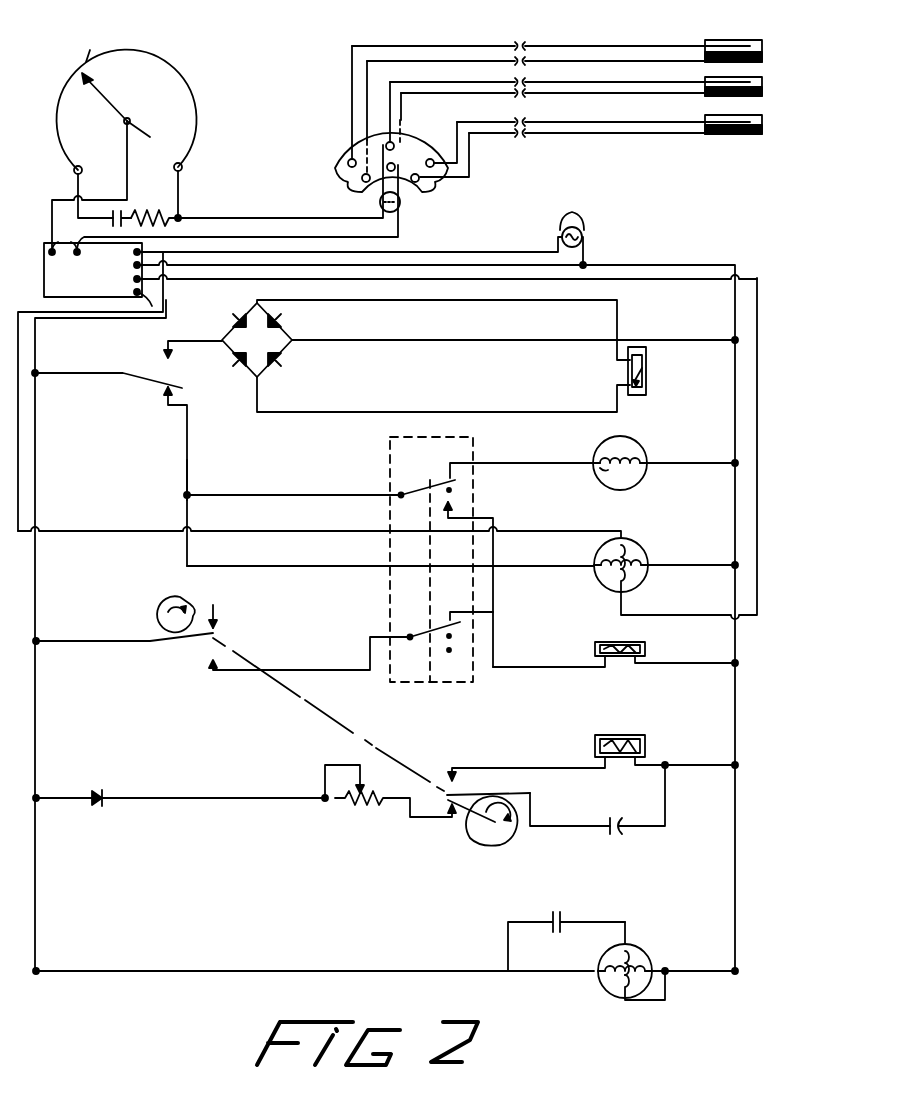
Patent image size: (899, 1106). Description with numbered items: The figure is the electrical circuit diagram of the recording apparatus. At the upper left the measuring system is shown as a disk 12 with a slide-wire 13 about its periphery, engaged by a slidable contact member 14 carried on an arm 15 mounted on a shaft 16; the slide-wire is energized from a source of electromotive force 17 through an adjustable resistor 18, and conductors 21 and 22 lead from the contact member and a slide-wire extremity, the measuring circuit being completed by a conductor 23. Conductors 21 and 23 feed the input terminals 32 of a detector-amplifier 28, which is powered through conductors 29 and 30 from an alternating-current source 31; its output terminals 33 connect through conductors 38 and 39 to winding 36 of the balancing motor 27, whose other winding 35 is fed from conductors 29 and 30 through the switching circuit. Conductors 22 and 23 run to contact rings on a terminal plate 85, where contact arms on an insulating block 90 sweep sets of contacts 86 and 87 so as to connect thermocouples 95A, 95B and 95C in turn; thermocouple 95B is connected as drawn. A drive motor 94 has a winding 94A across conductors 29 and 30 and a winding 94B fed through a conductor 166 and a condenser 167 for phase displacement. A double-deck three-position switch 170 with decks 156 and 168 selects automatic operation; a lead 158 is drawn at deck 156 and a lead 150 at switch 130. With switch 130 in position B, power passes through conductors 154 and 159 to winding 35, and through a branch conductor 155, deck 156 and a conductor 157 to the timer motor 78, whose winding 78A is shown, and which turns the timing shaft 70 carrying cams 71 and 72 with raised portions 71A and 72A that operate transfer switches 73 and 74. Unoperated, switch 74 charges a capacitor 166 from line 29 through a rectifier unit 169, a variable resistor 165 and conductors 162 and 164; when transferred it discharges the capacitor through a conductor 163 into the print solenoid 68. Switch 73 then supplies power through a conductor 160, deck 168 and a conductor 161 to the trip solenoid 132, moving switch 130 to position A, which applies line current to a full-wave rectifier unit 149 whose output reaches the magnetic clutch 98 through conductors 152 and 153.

The disk 12 is at (164, 117).
The slide-wire 13 is at (158, 60).
The slidable contact member 14 is at (81, 47).
The arm 15 is at (100, 95).
The shaft 16 is at (148, 137).
The source of electromotive force 17 is at (116, 214).
The adjustable resistor 18 is at (152, 210).
The conductor 21 is at (124, 144).
The conductor 22 is at (222, 218).
The conductor 23 is at (404, 236).
The balancing motor 27 is at (640, 544).
The detector-amplifier 28 is at (46, 268).
The conductor 29 is at (460, 252).
The conductor 30 is at (497, 265).
The alternating-current source 31 is at (572, 210).
The input terminals 32 is at (64, 239).
The output terminals 33 is at (148, 304).
The winding 35 is at (608, 575).
The winding 36 is at (636, 578).
The conductor 38 is at (22, 432).
The conductor 39 is at (224, 284).
The print solenoid 68 is at (644, 736).
The timing shaft 70 is at (326, 712).
The cam 71 is at (155, 604).
The raised portion 71A is at (196, 604).
The cam 72 is at (518, 840).
The raised portion 72A is at (468, 832).
The transfer switch 73 is at (226, 642).
The transfer switch 74 is at (443, 782).
The timer motor 78 is at (644, 450).
The timer motor winding 78A is at (600, 470).
The terminal plate 85 is at (424, 136).
The contacts 86 is at (348, 160).
The contacts 87 is at (362, 184).
The insulating block 90 is at (398, 202).
The drive motor 94 is at (632, 940).
The winding 94A is at (610, 976).
The winding 94B is at (612, 956).
The thermocouple 95A is at (718, 40).
The thermocouple 95B is at (710, 78).
The thermocouple 95C is at (712, 116).
The magnetic clutch 98 is at (647, 374).
The switch 130 is at (189, 378).
The trip solenoid 132 is at (640, 643).
The full-wave rectifier unit 149 is at (298, 328).
The conductor 150 is at (174, 336).
The conductor 152 is at (340, 303).
The conductor 153 is at (376, 412).
The conductor 154 is at (194, 474).
The branch conductor 155 is at (278, 495).
The switch deck 156 is at (458, 490).
The conductor 157 is at (510, 463).
The conductor 158 is at (484, 518).
The conductor 159 is at (288, 566).
The conductor 160 is at (268, 670).
The conductor 161 is at (540, 667).
The conductor 162 is at (392, 804).
The conductor 163 is at (526, 768).
The conductor 164 is at (534, 812).
The variable resistor 165 is at (352, 806).
The capacitor 166 is at (622, 828).
The condenser 167 is at (562, 920).
The switch deck 168 is at (458, 638).
The rectifier unit 169 is at (96, 791).
The three-position switch 170 is at (400, 594).